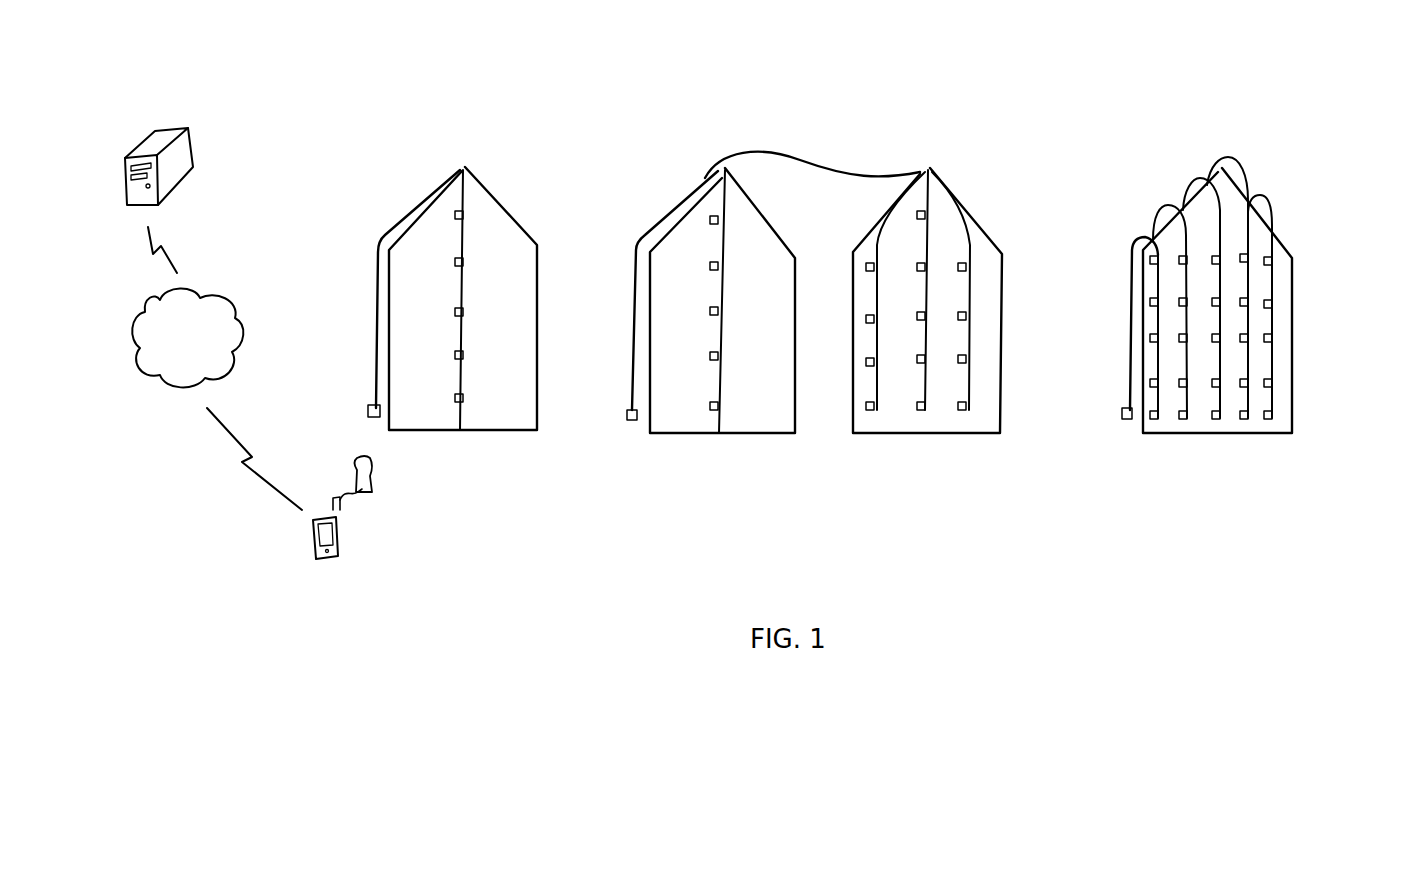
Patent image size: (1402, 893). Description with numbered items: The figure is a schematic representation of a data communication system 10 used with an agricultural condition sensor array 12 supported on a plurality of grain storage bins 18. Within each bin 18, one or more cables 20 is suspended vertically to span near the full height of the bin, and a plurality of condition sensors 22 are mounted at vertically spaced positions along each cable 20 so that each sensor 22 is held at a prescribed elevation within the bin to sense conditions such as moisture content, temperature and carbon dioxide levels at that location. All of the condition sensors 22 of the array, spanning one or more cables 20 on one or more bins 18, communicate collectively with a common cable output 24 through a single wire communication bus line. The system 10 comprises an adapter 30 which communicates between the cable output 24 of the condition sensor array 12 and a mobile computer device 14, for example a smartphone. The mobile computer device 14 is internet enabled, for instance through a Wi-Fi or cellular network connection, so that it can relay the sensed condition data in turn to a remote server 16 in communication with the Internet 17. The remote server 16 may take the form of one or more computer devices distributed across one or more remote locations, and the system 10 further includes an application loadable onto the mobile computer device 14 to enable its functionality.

The data communication system 10 is at (313, 465).
The condition sensor array 12 is at (437, 152).
The mobile computer device 14 is at (313, 538).
The remote server 16 is at (143, 140).
The Internet 17 is at (187, 337).
The grain storage bin 18 is at (500, 198).
The cable 20 is at (463, 283).
The condition sensor 22 is at (465, 354).
The cable output 24 is at (367, 405).
The adapter 30 is at (375, 478).